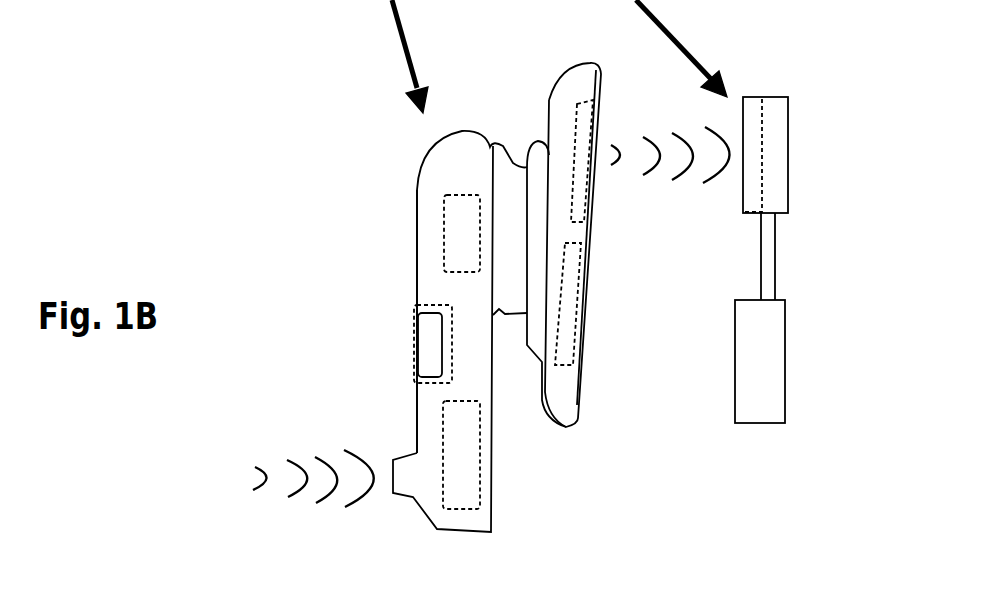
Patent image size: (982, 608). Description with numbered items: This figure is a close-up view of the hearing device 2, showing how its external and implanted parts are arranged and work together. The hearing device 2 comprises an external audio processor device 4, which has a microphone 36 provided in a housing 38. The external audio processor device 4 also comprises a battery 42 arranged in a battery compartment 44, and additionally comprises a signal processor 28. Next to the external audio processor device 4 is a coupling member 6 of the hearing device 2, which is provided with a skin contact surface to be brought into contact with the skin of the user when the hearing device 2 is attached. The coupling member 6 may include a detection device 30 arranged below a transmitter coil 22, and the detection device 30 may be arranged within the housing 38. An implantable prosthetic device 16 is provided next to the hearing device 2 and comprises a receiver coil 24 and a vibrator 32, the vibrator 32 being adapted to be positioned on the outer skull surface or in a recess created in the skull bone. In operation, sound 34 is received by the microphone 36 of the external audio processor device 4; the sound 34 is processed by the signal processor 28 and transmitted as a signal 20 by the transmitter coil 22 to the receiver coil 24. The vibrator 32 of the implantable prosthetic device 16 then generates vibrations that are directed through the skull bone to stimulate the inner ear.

The hearing device 2 is at (276, 322).
The external audio processor device 4 is at (397, 180).
The coupling member 6 is at (570, 120).
The implantable prosthetic device 16 is at (788, 150).
The signal 20 is at (680, 174).
The transmitter coil 22 is at (600, 92).
The receiver coil 24 is at (750, 97).
The signal processor 28 is at (455, 245).
The detection device 30 is at (573, 287).
The vibrator 32 is at (778, 385).
The sound 34 is at (266, 472).
The microphone 36 is at (465, 458).
The housing 38 is at (414, 300).
The battery 42 is at (423, 326).
The battery compartment 44 is at (435, 383).